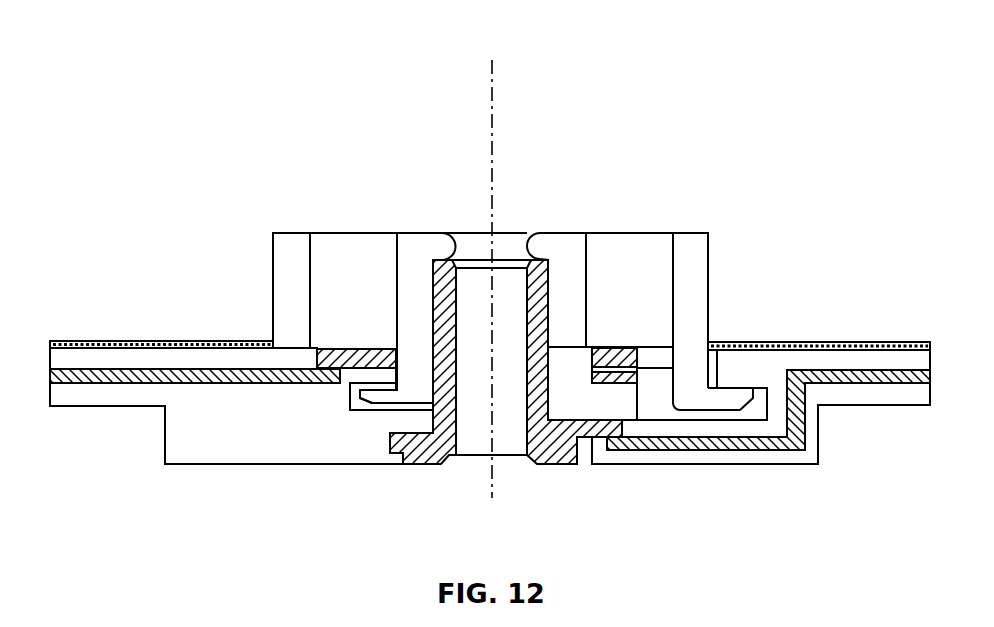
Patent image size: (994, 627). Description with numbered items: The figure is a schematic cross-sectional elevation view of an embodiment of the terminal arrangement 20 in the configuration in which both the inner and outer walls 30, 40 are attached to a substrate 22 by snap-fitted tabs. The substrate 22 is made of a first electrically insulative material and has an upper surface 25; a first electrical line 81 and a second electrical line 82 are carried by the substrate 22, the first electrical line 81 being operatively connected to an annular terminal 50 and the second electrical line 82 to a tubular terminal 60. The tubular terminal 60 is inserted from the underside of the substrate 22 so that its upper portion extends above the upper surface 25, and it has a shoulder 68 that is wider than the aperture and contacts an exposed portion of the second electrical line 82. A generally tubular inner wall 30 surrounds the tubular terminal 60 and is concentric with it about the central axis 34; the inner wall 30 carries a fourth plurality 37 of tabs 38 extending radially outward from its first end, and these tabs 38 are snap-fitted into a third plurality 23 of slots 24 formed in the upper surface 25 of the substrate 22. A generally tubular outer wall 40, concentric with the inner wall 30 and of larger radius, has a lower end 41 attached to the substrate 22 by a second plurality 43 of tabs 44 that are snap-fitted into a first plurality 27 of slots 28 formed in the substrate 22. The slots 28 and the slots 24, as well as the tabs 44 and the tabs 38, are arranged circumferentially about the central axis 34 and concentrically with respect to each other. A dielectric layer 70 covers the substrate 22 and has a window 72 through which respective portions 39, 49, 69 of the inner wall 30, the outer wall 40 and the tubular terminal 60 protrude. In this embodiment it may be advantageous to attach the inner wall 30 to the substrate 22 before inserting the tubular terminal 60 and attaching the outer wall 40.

The terminal arrangement 20 is at (138, 138).
The substrate 22 is at (95, 357).
The third plurality of slots 23 is at (233, 90).
The slot 24 is at (347, 118).
The upper surface 25 is at (163, 341).
The first plurality of slots 27 is at (680, 108).
The slot 28 is at (637, 215).
The inner wall 30 is at (422, 243).
The central axis 34 is at (493, 118).
The fourth plurality of tabs 37 is at (238, 505).
The tab 38 is at (382, 398).
The portion of the inner wall 39 is at (379, 252).
The outer wall 40 is at (286, 245).
The lower end 41 is at (692, 392).
The second plurality of tabs 43 is at (745, 510).
The tab 44 is at (720, 400).
The portion of the outer wall 49 is at (728, 292).
The annular terminal 50 is at (340, 356).
The tubular terminal 60 is at (562, 463).
The shoulder 68 is at (585, 458).
The portion of the tubular terminal 69 is at (566, 295).
The dielectric layer 70 is at (817, 342).
The window 72 is at (738, 250).
The first electrical line 81 is at (150, 380).
The second electrical line 82 is at (852, 370).